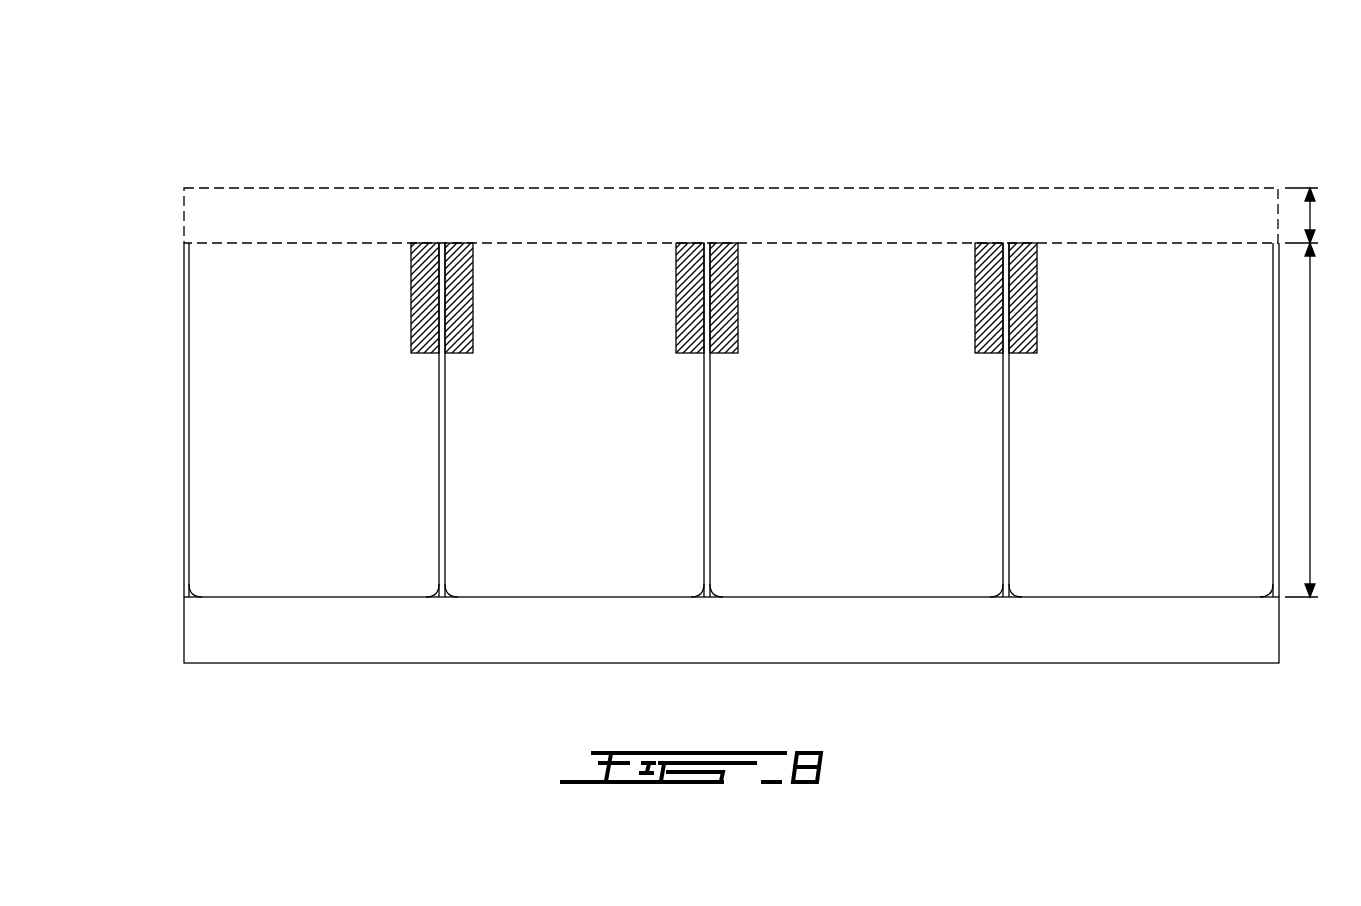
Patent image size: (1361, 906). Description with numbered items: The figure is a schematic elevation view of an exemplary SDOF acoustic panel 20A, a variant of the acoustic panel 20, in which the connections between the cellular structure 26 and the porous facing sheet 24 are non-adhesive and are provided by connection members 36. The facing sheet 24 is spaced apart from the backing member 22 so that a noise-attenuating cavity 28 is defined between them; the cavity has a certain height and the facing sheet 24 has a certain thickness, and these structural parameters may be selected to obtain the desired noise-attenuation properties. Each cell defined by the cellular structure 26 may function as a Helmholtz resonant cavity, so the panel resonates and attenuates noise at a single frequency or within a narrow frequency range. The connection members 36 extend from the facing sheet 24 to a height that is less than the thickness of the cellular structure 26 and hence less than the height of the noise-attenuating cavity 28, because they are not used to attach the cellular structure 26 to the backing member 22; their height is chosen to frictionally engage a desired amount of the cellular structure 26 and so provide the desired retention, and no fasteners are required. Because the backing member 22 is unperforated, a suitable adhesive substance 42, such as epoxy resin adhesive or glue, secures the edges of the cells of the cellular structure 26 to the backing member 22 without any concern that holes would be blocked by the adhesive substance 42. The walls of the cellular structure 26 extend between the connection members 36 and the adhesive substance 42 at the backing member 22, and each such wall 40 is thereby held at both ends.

The acoustic panel 20 is at (443, 113).
The SDOF acoustic panel 20A is at (705, 348).
The backing member 22 is at (203, 633).
The porous facing sheet 24 is at (202, 213).
The cellular structure 26 is at (203, 308).
The noise-attenuating cavity 28 is at (148, 438).
The connection member 36 is at (423, 297).
The pillar / post 40 is at (433, 358).
The adhesive substance 42 is at (196, 593).